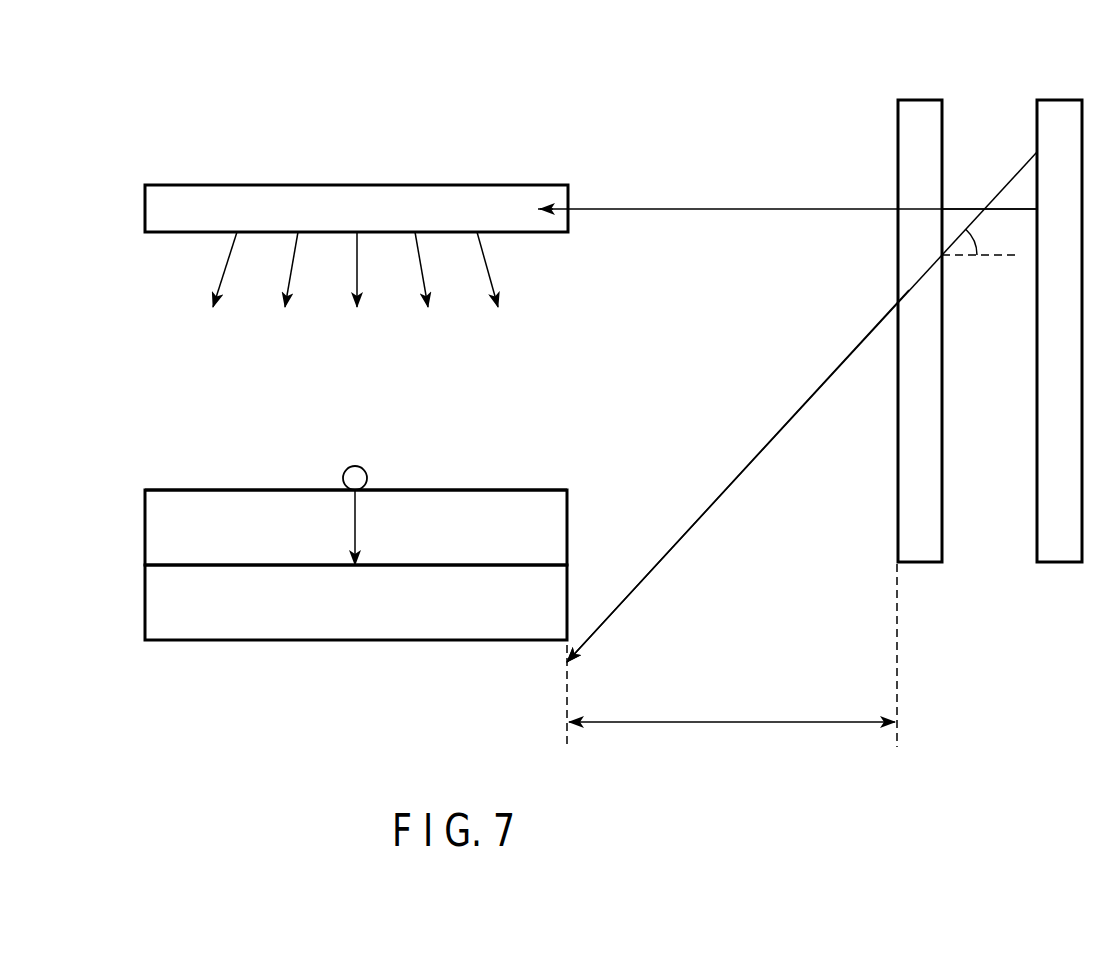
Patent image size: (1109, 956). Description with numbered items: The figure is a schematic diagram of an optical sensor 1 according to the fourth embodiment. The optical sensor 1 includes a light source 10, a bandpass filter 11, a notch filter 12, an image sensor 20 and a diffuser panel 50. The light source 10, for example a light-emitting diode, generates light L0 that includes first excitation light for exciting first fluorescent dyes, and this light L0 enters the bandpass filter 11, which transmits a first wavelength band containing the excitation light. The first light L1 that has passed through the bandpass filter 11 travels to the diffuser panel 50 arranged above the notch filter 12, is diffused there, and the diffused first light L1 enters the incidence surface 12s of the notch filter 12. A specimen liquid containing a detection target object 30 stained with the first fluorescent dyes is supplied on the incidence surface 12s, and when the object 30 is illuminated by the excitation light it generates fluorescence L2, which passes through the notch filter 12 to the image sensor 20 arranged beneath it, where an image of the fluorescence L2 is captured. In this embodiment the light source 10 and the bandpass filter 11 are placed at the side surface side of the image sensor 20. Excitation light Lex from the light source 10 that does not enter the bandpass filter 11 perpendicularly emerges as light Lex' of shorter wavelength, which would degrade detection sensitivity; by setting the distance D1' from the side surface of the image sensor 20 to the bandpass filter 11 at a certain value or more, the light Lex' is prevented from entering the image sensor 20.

The optical sensor 1 is at (528, 74).
The light source 10 is at (1061, 100).
The bandpass filter 11 is at (921, 100).
The notch filter 12 is at (145, 528).
The incidence surface 12s is at (538, 490).
The image sensor 20 is at (145, 597).
The detection target object 30 is at (365, 468).
The diffuser panel 50 is at (202, 185).
The light L0 is at (967, 208).
The first light L1 is at (718, 208).
The fluorescence L2 is at (362, 525).
The excitation light Lex is at (802, 384).
The light Lex' is at (738, 476).
The distance D1' is at (732, 655).